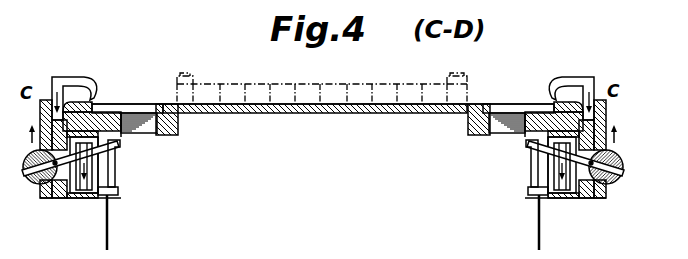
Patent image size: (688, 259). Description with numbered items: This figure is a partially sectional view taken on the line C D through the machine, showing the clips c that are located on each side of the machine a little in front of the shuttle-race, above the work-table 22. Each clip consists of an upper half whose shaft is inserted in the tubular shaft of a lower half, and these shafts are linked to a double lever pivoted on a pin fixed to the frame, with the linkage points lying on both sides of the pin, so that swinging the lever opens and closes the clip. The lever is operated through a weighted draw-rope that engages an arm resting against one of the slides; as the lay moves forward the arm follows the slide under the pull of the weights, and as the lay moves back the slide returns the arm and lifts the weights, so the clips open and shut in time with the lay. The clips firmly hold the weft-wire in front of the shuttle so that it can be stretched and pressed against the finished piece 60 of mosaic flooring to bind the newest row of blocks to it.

The work-table 22 is at (281, 115).
The finished piece of mosaic flooring 60 is at (304, 93).